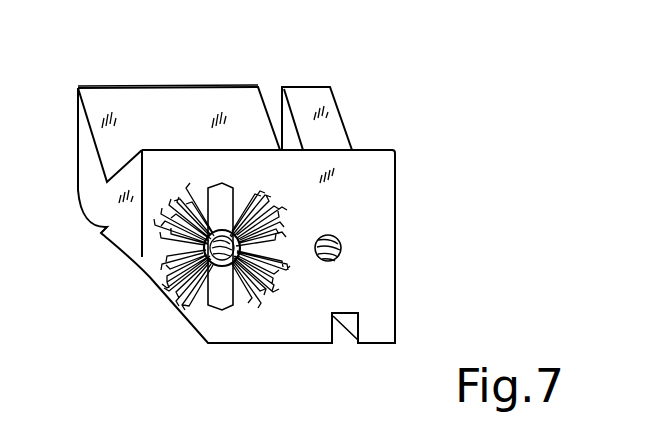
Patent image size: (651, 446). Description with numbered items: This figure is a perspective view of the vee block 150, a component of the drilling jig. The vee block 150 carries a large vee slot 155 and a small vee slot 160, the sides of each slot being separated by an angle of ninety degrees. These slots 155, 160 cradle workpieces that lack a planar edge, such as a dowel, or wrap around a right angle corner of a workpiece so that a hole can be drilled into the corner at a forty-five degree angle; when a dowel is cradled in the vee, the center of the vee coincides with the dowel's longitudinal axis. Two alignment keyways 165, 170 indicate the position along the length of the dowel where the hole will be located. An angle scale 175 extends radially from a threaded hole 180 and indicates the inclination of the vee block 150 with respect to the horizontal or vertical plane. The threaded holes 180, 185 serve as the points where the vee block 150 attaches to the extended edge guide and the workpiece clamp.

The vee block 150 is at (395, 253).
The large vee slot 155 is at (140, 102).
The small vee slot 160 is at (105, 238).
The alignment keyway 165 is at (283, 103).
The alignment keyway 170 is at (335, 318).
The angle scale 175 is at (210, 287).
The threaded hole 180 is at (204, 250).
The threaded hole 185 is at (330, 235).